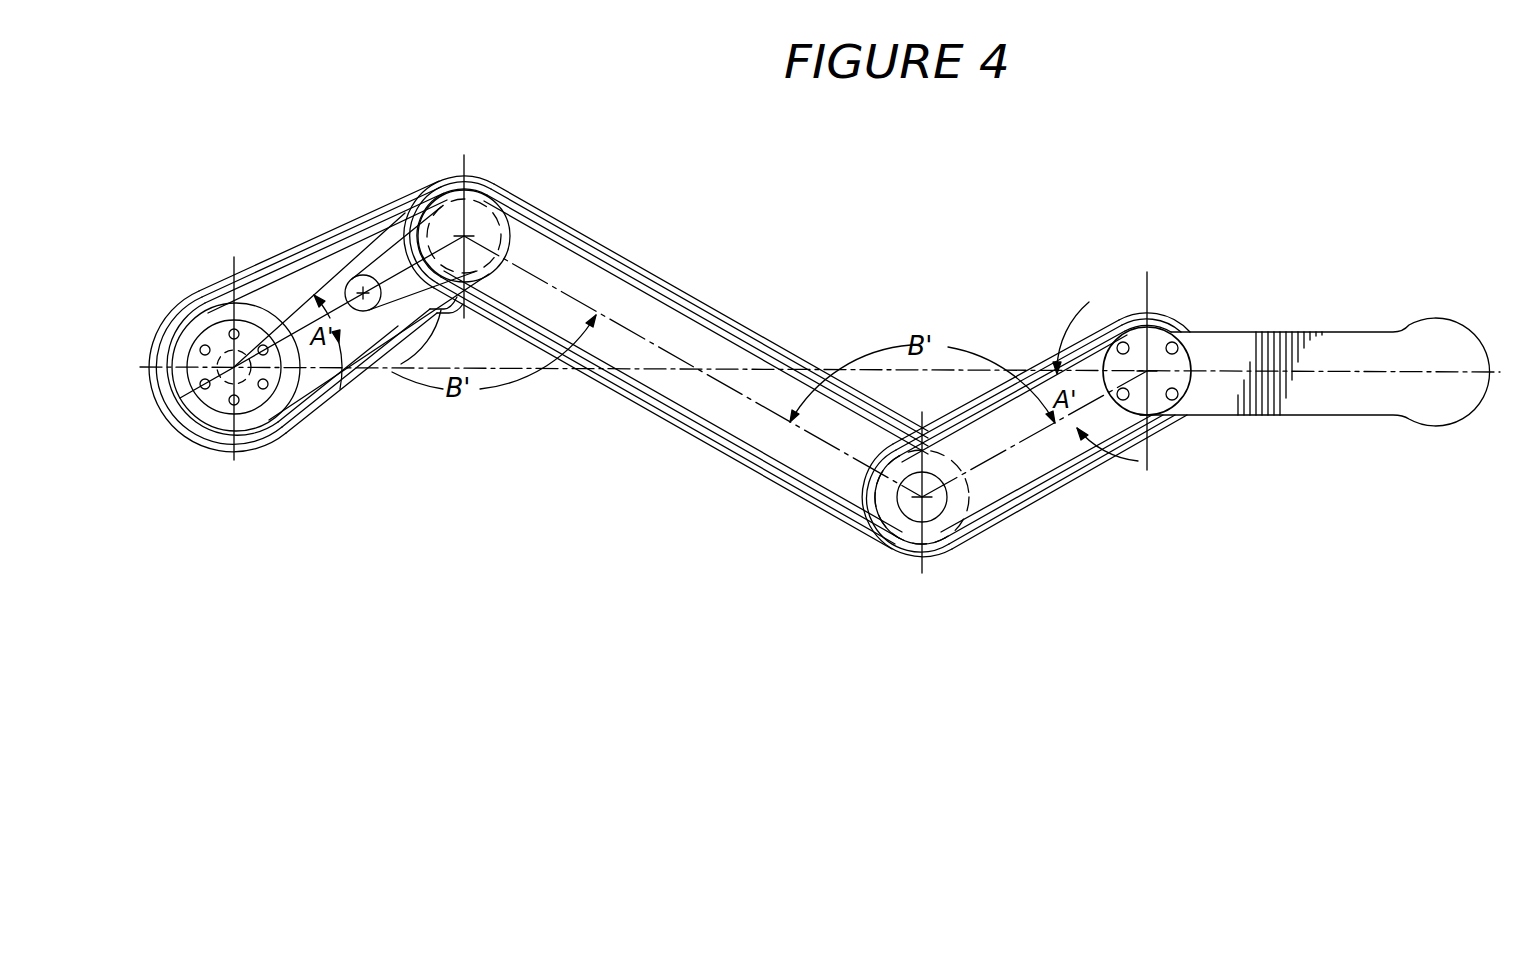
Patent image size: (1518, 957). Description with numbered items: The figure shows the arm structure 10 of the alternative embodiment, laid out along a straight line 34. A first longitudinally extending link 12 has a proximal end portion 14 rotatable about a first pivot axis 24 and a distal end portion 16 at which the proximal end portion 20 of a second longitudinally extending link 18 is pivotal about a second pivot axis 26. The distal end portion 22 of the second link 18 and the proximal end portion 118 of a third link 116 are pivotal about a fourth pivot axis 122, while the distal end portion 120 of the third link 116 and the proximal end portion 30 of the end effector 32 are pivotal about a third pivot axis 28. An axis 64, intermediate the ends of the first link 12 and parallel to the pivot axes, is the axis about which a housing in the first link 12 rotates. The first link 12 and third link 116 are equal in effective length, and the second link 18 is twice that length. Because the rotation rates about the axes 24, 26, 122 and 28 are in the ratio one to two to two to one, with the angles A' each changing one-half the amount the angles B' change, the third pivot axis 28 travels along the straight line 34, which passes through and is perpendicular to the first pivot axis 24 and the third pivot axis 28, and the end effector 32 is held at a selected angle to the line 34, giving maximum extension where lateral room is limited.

The arm structure 10 is at (983, 196).
The first longitudinally extending link 12 is at (250, 245).
The proximal end portion of the first link 14 is at (193, 292).
The distal end portion of the first link 16 is at (399, 192).
The second longitudinally extending link 18 is at (786, 302).
The proximal end portion of the second link 20 is at (518, 195).
The distal end portion of the second link 22 is at (863, 534).
The first pivot axis 24 is at (231, 371).
The second pivot axis 26 is at (468, 232).
The third pivot axis 28 is at (1160, 388).
The proximal end portion of the end effector 30 is at (1122, 321).
The end effector 32 is at (1298, 304).
The line 34 is at (558, 372).
The axis 64 is at (360, 293).
The third link 116 is at (1028, 356).
The proximal end portion of the third link 118 is at (946, 562).
The distal end portion of the third link 120 is at (1175, 349).
The fourth pivot axis 122 is at (920, 500).